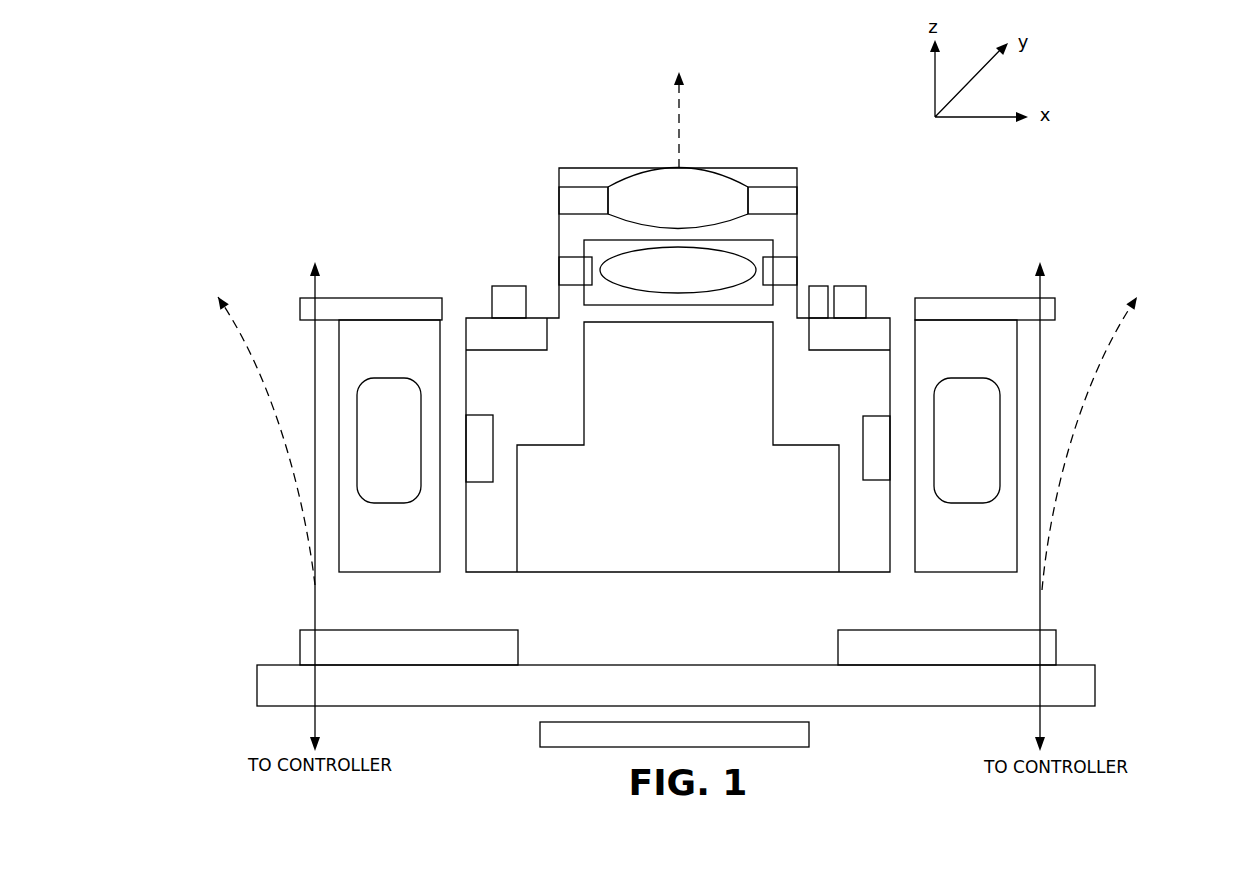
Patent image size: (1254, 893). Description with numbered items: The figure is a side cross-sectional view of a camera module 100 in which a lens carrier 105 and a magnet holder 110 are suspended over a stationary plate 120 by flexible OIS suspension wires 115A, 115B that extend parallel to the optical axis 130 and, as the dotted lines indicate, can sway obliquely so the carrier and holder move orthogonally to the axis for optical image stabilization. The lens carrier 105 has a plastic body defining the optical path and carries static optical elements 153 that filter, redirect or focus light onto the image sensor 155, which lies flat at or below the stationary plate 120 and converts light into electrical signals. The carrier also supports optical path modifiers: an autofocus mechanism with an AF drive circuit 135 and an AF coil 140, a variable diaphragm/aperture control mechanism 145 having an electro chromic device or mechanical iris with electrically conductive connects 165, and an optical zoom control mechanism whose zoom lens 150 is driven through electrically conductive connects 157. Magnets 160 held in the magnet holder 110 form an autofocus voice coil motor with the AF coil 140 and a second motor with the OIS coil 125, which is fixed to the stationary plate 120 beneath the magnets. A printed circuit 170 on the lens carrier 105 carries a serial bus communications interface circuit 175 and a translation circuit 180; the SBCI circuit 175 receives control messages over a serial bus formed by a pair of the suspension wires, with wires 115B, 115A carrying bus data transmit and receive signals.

The camera module 100 is at (333, 148).
The lens carrier 105 is at (872, 378).
The magnet holder 110 is at (240, 397).
The fourth OIS suspension wire 115A is at (1040, 605).
The third OIS suspension wire 115B is at (313, 585).
The stationary plate 120 is at (1095, 692).
The OIS coil 125 is at (243, 638).
The optical axis 130 is at (680, 108).
The AF drive circuit 135 is at (505, 285).
The AF coil 140 is at (485, 415).
The variable diaphragm/aperture control mechanism 145 is at (628, 192).
The zoom lens 150 is at (678, 287).
The static optical elements 153 is at (678, 447).
The image sensor 155 is at (800, 732).
The electrically conductive connects 157 is at (572, 268).
The magnets 160 is at (245, 488).
The electrically conductive connects 165 is at (840, 157).
The printed circuit 170 is at (432, 256).
The serial bus communications interface (SBCI) circuit 175 is at (857, 286).
The translation circuit 180 is at (822, 286).